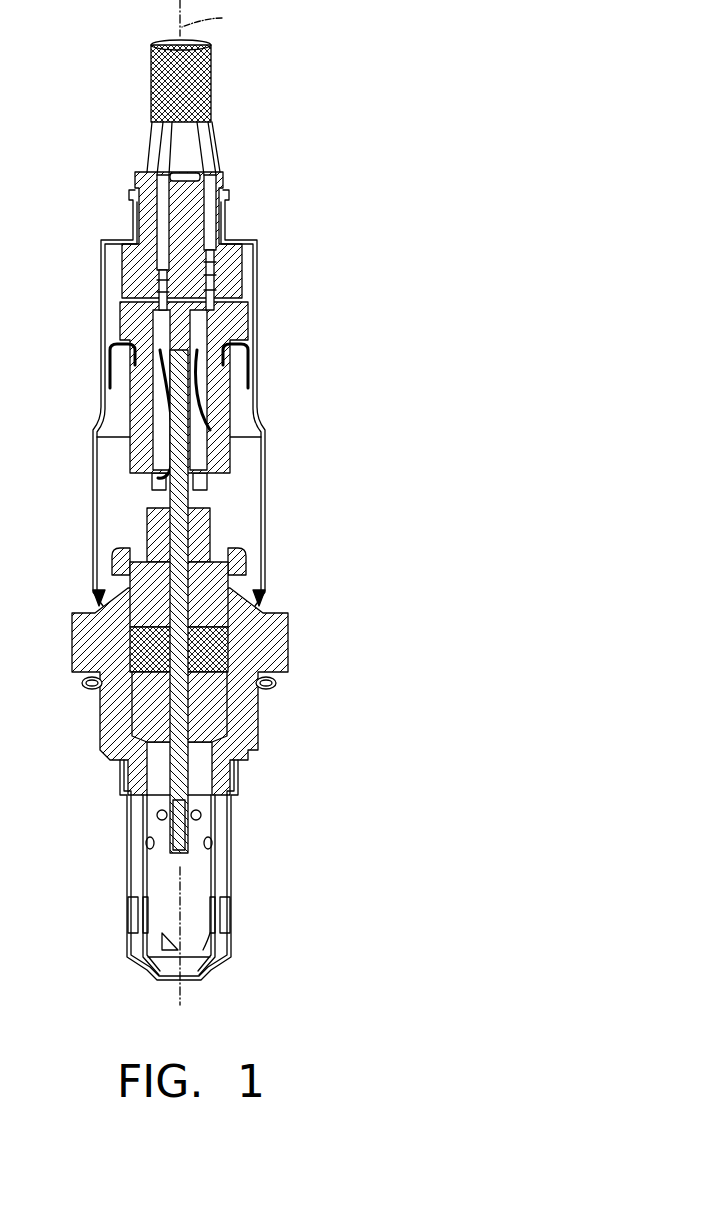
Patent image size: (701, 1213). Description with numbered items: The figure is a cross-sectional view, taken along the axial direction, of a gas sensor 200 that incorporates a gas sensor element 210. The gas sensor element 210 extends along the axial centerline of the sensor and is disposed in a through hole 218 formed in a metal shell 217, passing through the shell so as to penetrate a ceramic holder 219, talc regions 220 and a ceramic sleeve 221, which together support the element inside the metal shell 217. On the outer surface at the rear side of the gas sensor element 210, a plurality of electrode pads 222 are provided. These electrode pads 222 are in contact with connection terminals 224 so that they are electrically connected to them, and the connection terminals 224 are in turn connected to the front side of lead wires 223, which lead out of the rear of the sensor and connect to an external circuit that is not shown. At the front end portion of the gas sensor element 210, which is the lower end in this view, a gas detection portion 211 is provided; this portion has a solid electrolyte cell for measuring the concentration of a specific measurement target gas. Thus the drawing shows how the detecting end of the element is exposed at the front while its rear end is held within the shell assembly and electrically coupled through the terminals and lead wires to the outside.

The gas sensor 200 is at (245, 502).
The gas sensor element 210 is at (185, 765).
The gas detection portion 211 is at (178, 832).
The metal shell 217 is at (275, 642).
The through hole 218 is at (263, 605).
The ceramic holder 219 is at (212, 722).
The talc regions 220 is at (212, 685).
The ceramic sleeve 221 is at (207, 522).
The electrode pads 222 is at (197, 438).
The lead wires 223 is at (208, 165).
The connection terminals 224 is at (162, 392).